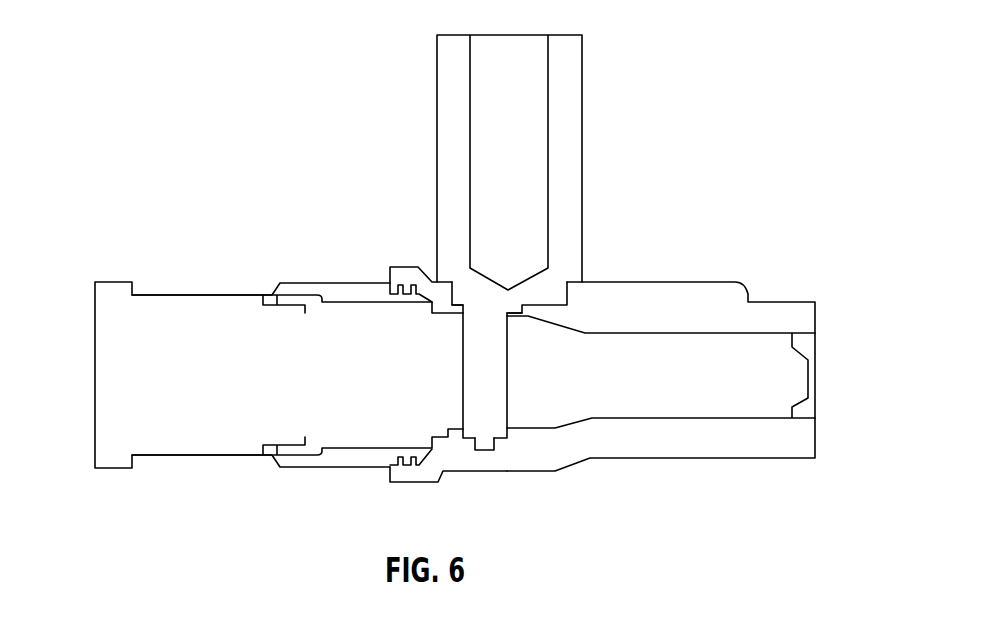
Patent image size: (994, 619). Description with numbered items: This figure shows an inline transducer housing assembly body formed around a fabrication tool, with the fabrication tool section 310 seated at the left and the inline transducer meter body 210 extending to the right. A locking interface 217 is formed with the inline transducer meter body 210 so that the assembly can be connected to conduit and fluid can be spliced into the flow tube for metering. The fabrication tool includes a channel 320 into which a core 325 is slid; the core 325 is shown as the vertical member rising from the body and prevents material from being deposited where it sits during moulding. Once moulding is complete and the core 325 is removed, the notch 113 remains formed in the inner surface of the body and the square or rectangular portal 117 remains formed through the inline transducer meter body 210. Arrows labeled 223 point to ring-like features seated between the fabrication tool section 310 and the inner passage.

The fabrication tool section 310 is at (193, 317).
The collar / sealing ring 223 is at (287, 430).
The locking interface 217 is at (407, 268).
The core 325 is at (477, 145).
The inline transducer meter body 210 is at (668, 292).
The notch 113 is at (481, 432).
The channel 320 is at (490, 317).
The square or rectangular portal 117 is at (487, 366).